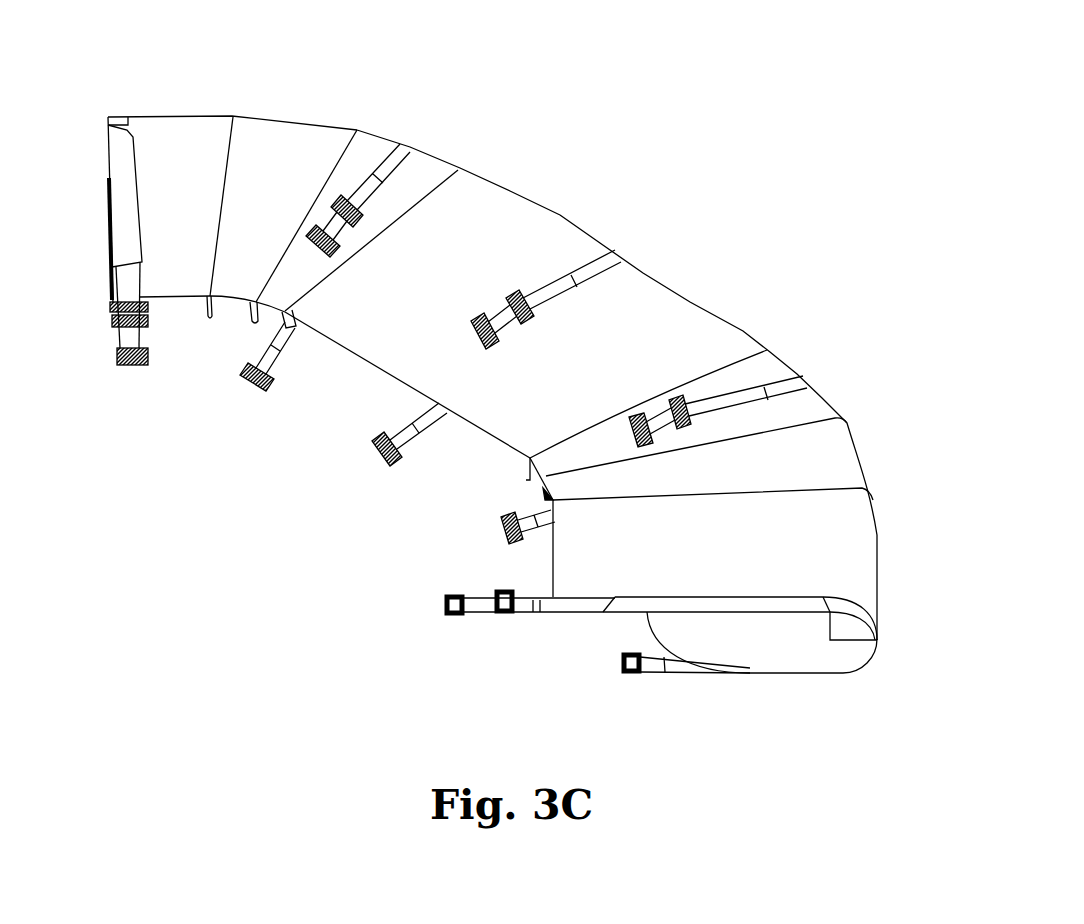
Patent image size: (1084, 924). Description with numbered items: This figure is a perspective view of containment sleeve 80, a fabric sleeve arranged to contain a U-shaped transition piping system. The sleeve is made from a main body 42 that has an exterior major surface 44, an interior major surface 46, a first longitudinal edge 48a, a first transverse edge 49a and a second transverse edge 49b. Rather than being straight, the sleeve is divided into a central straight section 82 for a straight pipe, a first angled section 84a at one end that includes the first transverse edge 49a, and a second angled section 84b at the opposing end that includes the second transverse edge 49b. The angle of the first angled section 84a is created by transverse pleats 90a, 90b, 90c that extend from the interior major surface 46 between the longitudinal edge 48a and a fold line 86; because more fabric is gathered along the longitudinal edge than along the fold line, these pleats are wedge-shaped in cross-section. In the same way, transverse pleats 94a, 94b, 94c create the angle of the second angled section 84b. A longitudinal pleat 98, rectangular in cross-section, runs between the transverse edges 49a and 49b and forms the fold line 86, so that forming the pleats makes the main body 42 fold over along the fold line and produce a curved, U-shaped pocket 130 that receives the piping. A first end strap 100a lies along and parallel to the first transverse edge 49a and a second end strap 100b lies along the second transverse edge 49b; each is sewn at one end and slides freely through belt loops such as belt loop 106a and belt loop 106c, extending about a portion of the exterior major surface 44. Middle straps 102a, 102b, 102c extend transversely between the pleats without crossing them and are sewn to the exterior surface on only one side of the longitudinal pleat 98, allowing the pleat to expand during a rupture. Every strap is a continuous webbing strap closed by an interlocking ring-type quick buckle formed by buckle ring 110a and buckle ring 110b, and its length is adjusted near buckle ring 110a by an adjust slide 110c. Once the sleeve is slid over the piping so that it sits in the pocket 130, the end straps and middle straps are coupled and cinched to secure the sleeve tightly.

The containment sleeve 80 is at (668, 108).
The central straight section 82 is at (726, 272).
The first angled section 84a is at (275, 80).
The second angled section 84b is at (860, 438).
The main body 42 is at (486, 199).
The exterior major surface 44 is at (532, 217).
The interior major surface 46 is at (795, 652).
The first longitudinal edge 48a is at (398, 388).
The first transverse edge 49a is at (107, 217).
The second transverse edge 49b is at (622, 620).
The fold line 86 is at (880, 553).
The transverse pleat 90a is at (210, 313).
The transverse pleat 90b is at (252, 320).
The transverse pleat 90c is at (290, 330).
The transverse pleat 94a is at (718, 492).
The transverse pleat 94b is at (545, 493).
The transverse pleat 94c is at (527, 468).
The longitudinal pleat 98 is at (851, 652).
The first end strap 100a is at (117, 296).
The second end strap 100b is at (566, 613).
The middle strap 102a is at (401, 147).
The middle strap 102b is at (608, 256).
The middle strap 102c is at (788, 381).
The belt loop 106a is at (124, 173).
The belt loop 106c is at (722, 596).
The buckle ring 110a is at (340, 250).
The buckle ring 110b is at (132, 366).
The adjust slide 110c is at (363, 218).
The pocket 130 is at (750, 648).